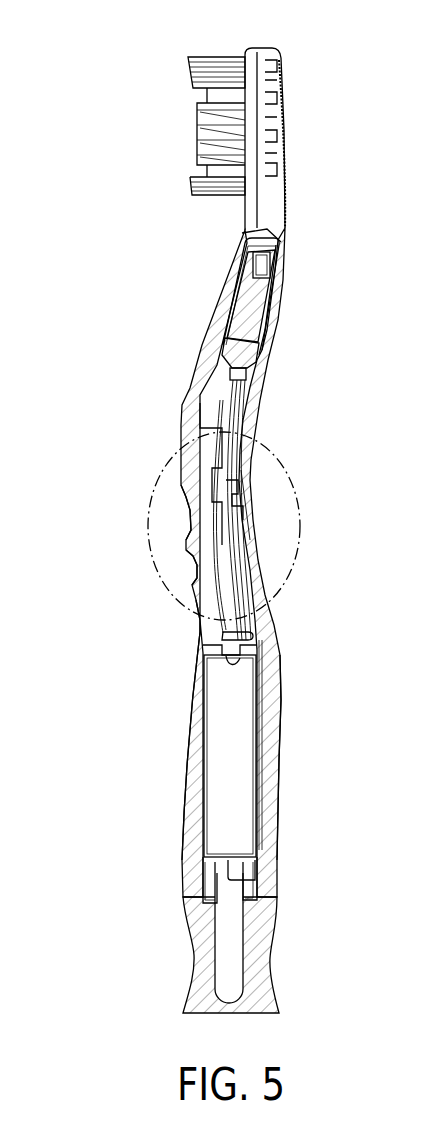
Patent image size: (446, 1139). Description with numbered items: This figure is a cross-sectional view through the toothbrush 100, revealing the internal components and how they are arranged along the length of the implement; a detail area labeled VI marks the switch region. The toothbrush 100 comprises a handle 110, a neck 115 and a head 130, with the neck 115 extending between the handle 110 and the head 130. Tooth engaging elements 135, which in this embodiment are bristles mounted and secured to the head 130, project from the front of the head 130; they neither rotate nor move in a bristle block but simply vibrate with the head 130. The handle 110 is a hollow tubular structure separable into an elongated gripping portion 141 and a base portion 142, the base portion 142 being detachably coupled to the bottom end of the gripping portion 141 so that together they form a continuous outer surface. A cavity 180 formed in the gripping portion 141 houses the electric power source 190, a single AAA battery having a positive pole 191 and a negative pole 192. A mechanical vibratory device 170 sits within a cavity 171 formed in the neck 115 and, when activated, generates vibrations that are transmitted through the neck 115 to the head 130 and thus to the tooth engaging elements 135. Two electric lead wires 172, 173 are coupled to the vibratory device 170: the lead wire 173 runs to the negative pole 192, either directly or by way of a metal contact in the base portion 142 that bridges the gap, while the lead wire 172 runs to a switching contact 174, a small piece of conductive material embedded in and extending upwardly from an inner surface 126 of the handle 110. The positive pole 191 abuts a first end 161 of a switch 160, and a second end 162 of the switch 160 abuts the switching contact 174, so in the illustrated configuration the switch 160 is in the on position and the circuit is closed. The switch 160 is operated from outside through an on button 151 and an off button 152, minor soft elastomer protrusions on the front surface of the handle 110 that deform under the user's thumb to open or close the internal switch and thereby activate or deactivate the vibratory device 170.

The toothbrush 100 is at (124, 132).
The handle 110 is at (189, 694).
The neck 115 is at (283, 289).
The inner surface 126 is at (245, 538).
The head 130 is at (255, 110).
The tooth engaging elements 135 is at (205, 47).
The elongated gripping portion 141 is at (178, 729).
The base portion 142 is at (206, 951).
The on button 151 is at (188, 518).
The off button 152 is at (200, 566).
The switch 160 is at (219, 590).
The first end 161 is at (245, 642).
The second end 162 is at (197, 484).
The mechanical vibratory device 170 is at (258, 300).
The cavity 171 is at (245, 263).
The electric lead wire 172 is at (198, 398).
The electric lead wire 173 is at (232, 395).
The switching contact 174 is at (229, 492).
The cavity 180 is at (199, 627).
The electric power source 190 is at (233, 781).
The positive pole 191 is at (236, 661).
The negative pole 192 is at (234, 878).
The detail section VI is at (279, 456).